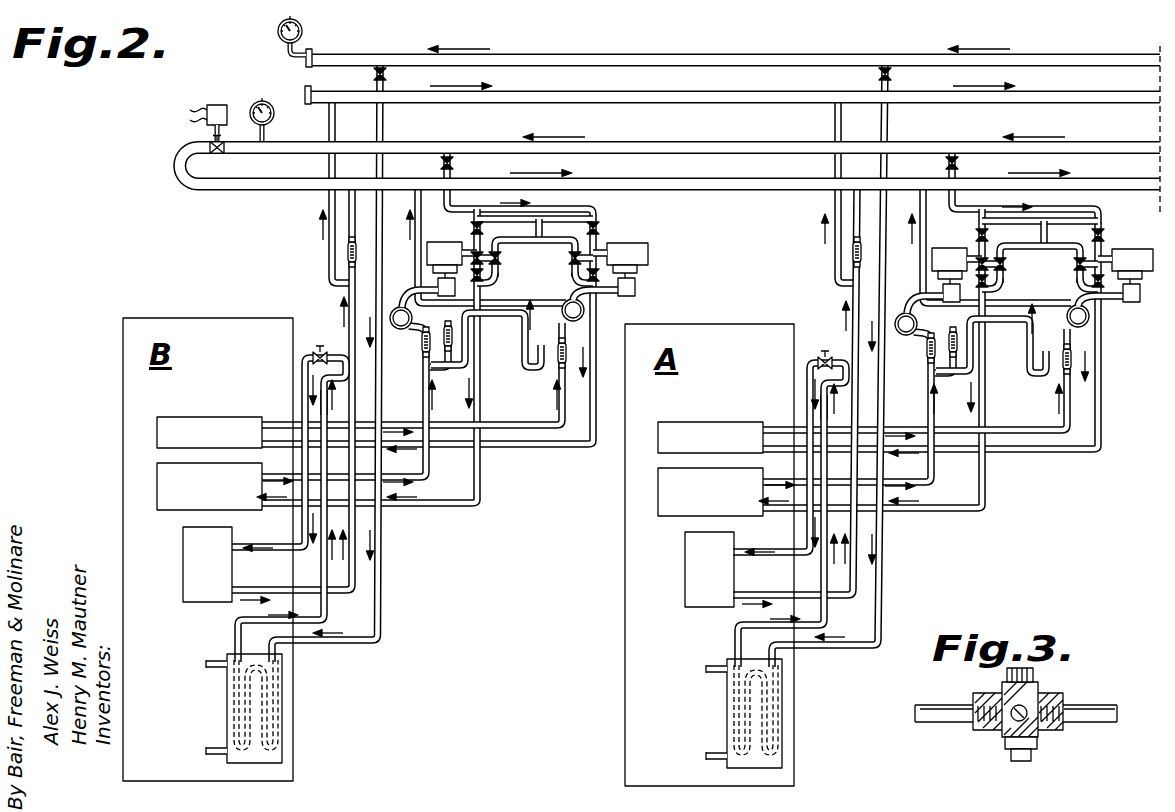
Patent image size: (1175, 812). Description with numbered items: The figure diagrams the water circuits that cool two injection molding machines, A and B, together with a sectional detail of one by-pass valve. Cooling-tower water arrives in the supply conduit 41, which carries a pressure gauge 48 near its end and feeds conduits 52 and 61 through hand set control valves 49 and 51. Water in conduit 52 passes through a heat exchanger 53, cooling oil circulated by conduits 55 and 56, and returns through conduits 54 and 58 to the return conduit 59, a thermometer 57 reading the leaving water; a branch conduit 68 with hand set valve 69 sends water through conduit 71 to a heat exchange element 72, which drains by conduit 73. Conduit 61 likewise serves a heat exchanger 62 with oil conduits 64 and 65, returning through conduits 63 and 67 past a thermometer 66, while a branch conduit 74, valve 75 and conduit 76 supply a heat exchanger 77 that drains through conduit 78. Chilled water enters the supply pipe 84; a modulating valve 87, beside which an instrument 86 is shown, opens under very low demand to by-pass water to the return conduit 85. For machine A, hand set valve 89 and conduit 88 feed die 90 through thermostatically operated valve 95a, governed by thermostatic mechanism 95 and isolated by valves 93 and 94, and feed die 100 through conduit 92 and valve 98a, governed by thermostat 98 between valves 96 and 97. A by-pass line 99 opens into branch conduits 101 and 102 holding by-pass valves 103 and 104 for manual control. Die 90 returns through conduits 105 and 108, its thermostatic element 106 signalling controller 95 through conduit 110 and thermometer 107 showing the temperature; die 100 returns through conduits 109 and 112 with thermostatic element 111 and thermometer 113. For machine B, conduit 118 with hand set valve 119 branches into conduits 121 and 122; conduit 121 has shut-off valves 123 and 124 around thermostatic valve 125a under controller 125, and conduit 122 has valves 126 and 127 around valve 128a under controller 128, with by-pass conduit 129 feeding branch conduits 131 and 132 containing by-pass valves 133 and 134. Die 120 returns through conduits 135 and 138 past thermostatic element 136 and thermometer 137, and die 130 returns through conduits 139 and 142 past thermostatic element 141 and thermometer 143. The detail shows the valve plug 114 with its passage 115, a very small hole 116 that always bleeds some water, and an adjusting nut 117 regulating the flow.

In FIG. 2, the supply conduit 41 is at (586, 56).
In FIG. 2, the return conduit 59 is at (782, 98).
In FIG. 2, the supply pipe 84 is at (679, 141).
In FIG. 2, the return conduit 85 is at (716, 187).
In FIG. 2, the pressure gauge 48 is at (303, 33).
In FIG. 2, the pressure gauge 86 is at (268, 92).
In FIG. 2, the modulating valve 87 is at (217, 104).
In FIG. 2, the hand set control valve 51 is at (386, 75).
In FIG. 2, the hand set control valve 49 is at (890, 76).
In FIG. 2, the conduit 61 is at (384, 124).
In FIG. 2, the conduit 52 is at (890, 124).
In FIG. 2, the conduit 67 is at (328, 124).
In FIG. 2, the conduit 58 is at (833, 124).
In FIG. 2, the hand set valve 119 is at (441, 164).
In FIG. 2, the hand set valve 89 is at (958, 168).
In FIG. 2, the conduit 118 is at (452, 203).
In FIG. 2, the conduit 88 is at (960, 207).
In FIG. 2, the thermometer 66 is at (366, 222).
In FIG. 2, the thermometer 57 is at (866, 230).
In FIG. 2, the valve 126 is at (470, 229).
In FIG. 2, the valve 96 is at (977, 235).
In FIG. 2, the thermostatically controlled valve 128a is at (474, 250).
In FIG. 2, the thermostatically controlled valve 98a is at (982, 256).
In FIG. 2, the thermostatic valve controller 128 is at (452, 269).
In FIG. 2, the thermostatic valve controller 98 is at (957, 275).
In FIG. 2, the by-pass conduit 129 is at (531, 229).
In FIG. 2, the by-pass line 99 is at (1035, 240).
In FIG. 2, the thermostatically controlled valve 125a is at (566, 227).
In FIG. 2, the thermostatically operated valve 95a is at (1067, 234).
In FIG. 2, the shut-off valve 123 is at (600, 229).
In FIG. 2, the valve 93 is at (1105, 235).
In FIG. 2, the thermostatic valve controller 125 is at (650, 250).
In FIG. 2, the thermostatic mechanism 95 is at (1125, 275).
In FIG. 2, the branch conduit 132 is at (497, 259).
In FIG. 2, the branch by-pass conduit 102 is at (1003, 264).
In FIG. 3, the branch by-pass conduit 102 is at (945, 725).
In FIG. 2, the branch conduit 131 is at (572, 248).
In FIG. 2, the branch by-pass conduit 101 is at (1078, 254).
In FIG. 2, the by-pass valve 134 is at (497, 275).
In FIG. 2, the by-pass valve 104 is at (1001, 282).
In FIG. 2, the by-pass valve 133 is at (572, 276).
In FIG. 2, the by-pass valve 103 is at (1078, 282).
In FIG. 3, the by-pass valve 103 is at (975, 698).
In FIG. 2, the valve 127 is at (481, 288).
In FIG. 2, the valve 97 is at (986, 292).
In FIG. 2, the shut-off valve 124 is at (590, 290).
In FIG. 2, the valve 94 is at (1094, 292).
In FIG. 2, the conduit 138 is at (414, 266).
In FIG. 2, the conduit 108 is at (919, 266).
In FIG. 2, the thermometer 143 is at (448, 326).
In FIG. 2, the thermometer 113 is at (952, 330).
In FIG. 2, the thermometer 137 is at (545, 312).
In FIG. 2, the thermometer 107 is at (1068, 314).
In FIG. 2, the conduit 121 is at (597, 318).
In FIG. 2, the conduit 110 is at (1100, 318).
In FIG. 2, the thermostatic element 141 is at (421, 350).
In FIG. 2, the thermostatic element 111 is at (926, 358).
In FIG. 2, the thermostatic element 136 is at (570, 348).
In FIG. 2, the thermostatic element 106 is at (1075, 354).
In FIG. 2, the conduit 142 is at (448, 370).
In FIG. 2, the conduit 112 is at (953, 376).
In FIG. 2, the conduit 122 is at (480, 392).
In FIG. 2, the conduit 92 is at (986, 360).
In FIG. 2, the conduit 135 is at (530, 420).
In FIG. 2, the conduit 105 is at (990, 415).
In FIG. 2, the conduit 139 is at (420, 466).
In FIG. 2, the conduit 109 is at (926, 466).
In FIG. 2, the valve 75 is at (319, 356).
In FIG. 2, the hand set valve 69 is at (823, 362).
In FIG. 2, the branch conduit 74 is at (328, 356).
In FIG. 2, the branch conduit 68 is at (828, 360).
In FIG. 2, the conduit 76 is at (302, 378).
In FIG. 2, the conduit 71 is at (807, 384).
In FIG. 2, the die 120 is at (175, 416).
In FIG. 2, the die 90 is at (680, 421).
In FIG. 2, the die 130 is at (178, 510).
In FIG. 2, the die 100 is at (683, 516).
In FIG. 2, the heat exchanger 77 is at (182, 560).
In FIG. 2, the heat exchange element 72 is at (686, 573).
In FIG. 2, the conduit 78 is at (268, 572).
In FIG. 2, the conduit 73 is at (770, 581).
In FIG. 2, the conduit 63 is at (236, 634).
In FIG. 2, the conduit 54 is at (736, 639).
In FIG. 2, the conduit 64 is at (212, 671).
In FIG. 2, the conduit 55 is at (712, 677).
In FIG. 2, the heat exchanger 62 is at (288, 680).
In FIG. 2, the heat exchanger 53 is at (792, 705).
In FIG. 2, the conduit 65 is at (212, 745).
In FIG. 2, the conduit 56 is at (712, 753).
In FIG. 3, the adjusting nut 117 is at (1006, 674).
In FIG. 3, the valve plug 114 is at (1045, 700).
In FIG. 3, the small diameter hole 116 is at (990, 735).
In FIG. 3, the passage 115 is at (1048, 745).